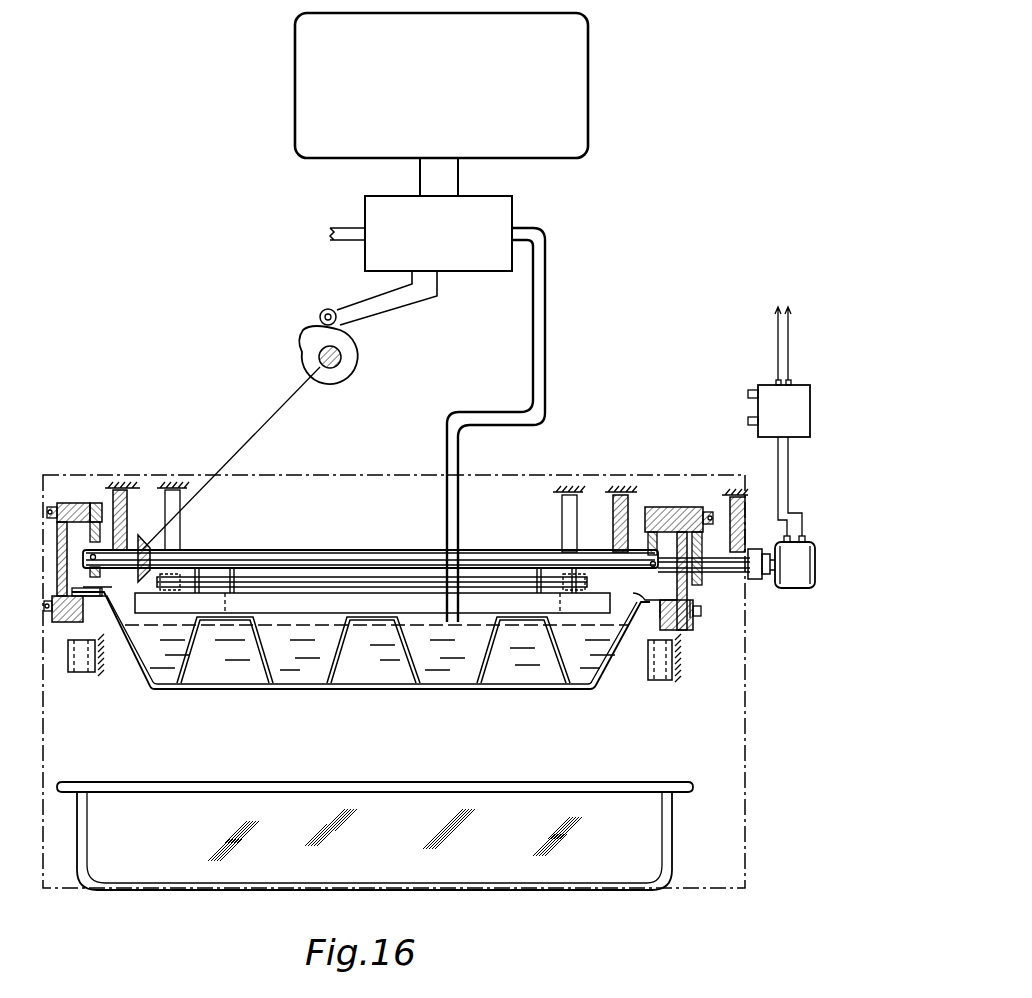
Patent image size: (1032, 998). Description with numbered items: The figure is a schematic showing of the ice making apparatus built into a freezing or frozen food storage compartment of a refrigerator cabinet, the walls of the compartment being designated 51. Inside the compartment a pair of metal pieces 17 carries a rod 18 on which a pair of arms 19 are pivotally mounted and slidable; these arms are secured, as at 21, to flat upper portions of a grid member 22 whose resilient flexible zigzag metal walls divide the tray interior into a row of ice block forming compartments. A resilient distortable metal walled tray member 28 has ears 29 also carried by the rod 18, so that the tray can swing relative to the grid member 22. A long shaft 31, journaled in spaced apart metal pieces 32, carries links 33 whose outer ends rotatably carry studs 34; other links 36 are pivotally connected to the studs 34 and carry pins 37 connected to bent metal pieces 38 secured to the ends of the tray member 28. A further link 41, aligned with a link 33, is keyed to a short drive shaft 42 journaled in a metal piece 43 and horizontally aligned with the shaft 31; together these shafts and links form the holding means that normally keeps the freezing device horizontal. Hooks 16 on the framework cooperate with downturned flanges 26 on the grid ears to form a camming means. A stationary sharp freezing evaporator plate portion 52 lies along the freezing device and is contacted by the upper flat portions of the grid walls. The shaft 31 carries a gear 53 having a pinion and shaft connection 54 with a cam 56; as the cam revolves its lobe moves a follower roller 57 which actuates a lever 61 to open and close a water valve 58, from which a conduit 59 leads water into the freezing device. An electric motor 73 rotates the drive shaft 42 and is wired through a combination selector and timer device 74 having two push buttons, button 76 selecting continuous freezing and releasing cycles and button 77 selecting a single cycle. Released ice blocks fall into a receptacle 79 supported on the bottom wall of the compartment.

The hook 16 is at (83, 672).
The metal pieces 17 is at (179, 523).
The rod 18 is at (395, 582).
The arms 19 is at (228, 604).
The securing point 21 is at (207, 604).
The grid member 22 is at (266, 690).
The flange 26 is at (78, 608).
The tray member 28 is at (222, 688).
The ears 29 is at (197, 592).
The shaft 31 is at (316, 556).
The metal pieces 32 is at (128, 505).
The links 33 is at (95, 503).
The stud 34 is at (77, 503).
The links 36 is at (55, 505).
The pin 37 is at (83, 626).
The bent metal piece 38 is at (84, 587).
The link 41 is at (704, 580).
The drive shaft 42 is at (739, 578).
The metal piece 43 is at (742, 510).
The compartment walls 51 is at (375, 475).
The evaporator plate portion 52 is at (290, 603).
The gear 53 is at (143, 540).
The pinion and shaft connection 54 is at (252, 439).
The cam 56 is at (304, 368).
The follower roller 57 is at (320, 312).
The water valve 58 is at (483, 280).
The conduit 59 is at (539, 363).
The lever 61 is at (378, 308).
The electric motor 73 is at (806, 590).
The combination selector and timer device 74 is at (768, 389).
The push button 76 is at (748, 393).
The push button 77 is at (748, 421).
The ice block receptacle 79 is at (319, 790).